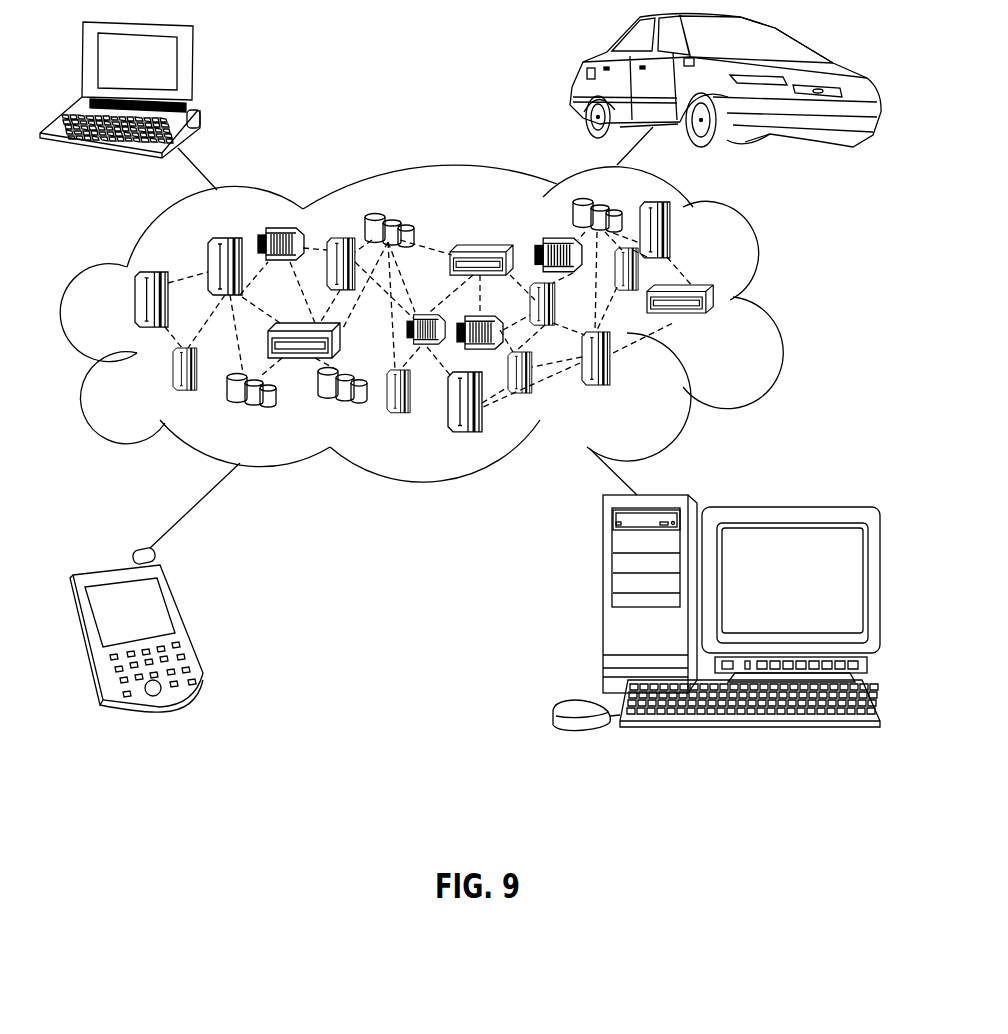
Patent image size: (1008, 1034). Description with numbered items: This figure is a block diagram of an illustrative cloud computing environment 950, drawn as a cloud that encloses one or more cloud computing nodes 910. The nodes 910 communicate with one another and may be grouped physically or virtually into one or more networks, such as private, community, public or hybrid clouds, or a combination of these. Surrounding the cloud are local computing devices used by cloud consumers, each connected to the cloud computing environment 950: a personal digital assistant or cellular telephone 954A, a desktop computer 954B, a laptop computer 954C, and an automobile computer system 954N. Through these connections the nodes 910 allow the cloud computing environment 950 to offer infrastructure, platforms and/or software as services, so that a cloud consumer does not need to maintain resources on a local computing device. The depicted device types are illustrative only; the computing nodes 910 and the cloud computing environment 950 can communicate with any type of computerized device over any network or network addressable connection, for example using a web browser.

The cloud computing environment 950 is at (758, 262).
The cloud computing nodes 910 is at (733, 322).
The personal digital assistant (PDA) or cellular telephone 954A is at (183, 623).
The desktop computer 954B is at (603, 603).
The laptop computer 954C is at (196, 68).
The automobile computer system 954N is at (578, 72).